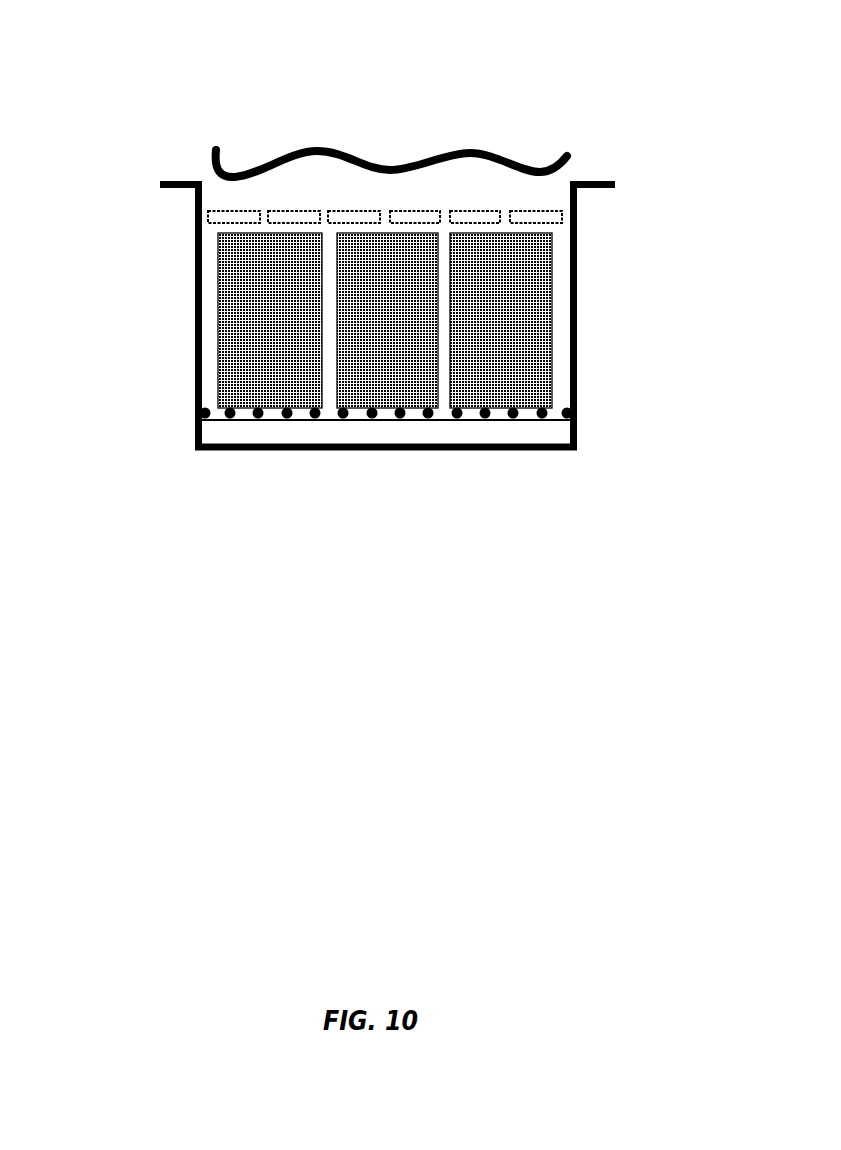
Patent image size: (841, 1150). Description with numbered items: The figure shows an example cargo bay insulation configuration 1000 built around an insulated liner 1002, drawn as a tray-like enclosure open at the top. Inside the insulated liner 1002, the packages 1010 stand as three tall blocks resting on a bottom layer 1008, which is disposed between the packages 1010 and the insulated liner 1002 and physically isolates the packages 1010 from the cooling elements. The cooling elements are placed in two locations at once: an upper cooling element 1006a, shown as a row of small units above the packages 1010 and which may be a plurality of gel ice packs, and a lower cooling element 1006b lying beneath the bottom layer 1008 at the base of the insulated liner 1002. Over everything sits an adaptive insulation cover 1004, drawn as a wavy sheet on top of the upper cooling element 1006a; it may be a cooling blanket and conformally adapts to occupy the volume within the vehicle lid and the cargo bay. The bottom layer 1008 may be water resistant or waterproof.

The cargo bay insulation configuration 1000 is at (109, 84).
The insulated liner 1002 is at (195, 335).
The adaptive insulation cover 1004 is at (500, 160).
The cooling element 1006a is at (553, 217).
The cooling element 1006b is at (213, 435).
The bottom layer 1008 is at (578, 415).
The packages 1010 is at (220, 267).